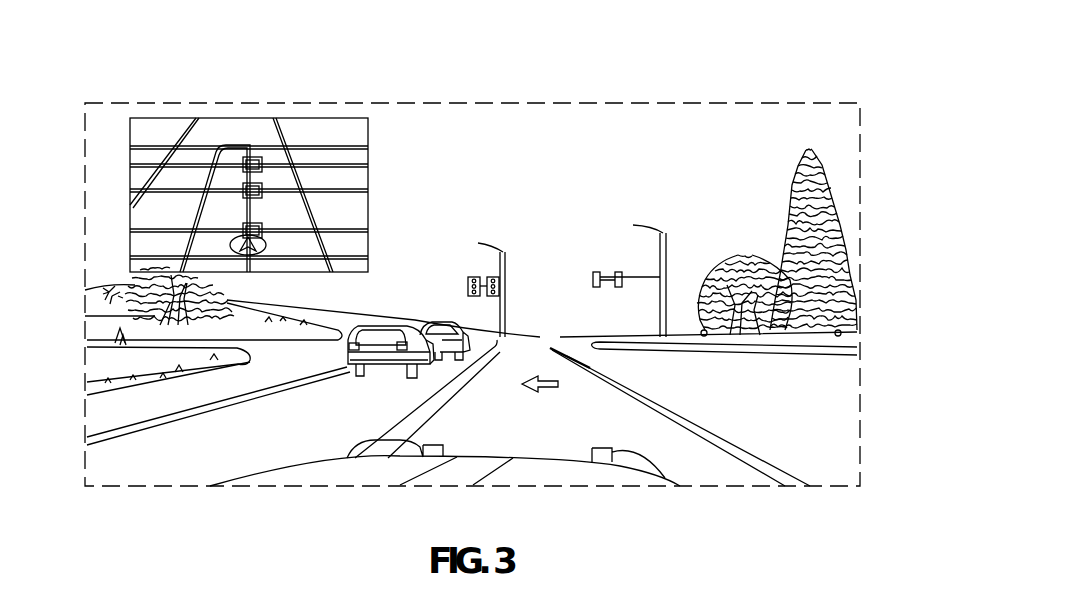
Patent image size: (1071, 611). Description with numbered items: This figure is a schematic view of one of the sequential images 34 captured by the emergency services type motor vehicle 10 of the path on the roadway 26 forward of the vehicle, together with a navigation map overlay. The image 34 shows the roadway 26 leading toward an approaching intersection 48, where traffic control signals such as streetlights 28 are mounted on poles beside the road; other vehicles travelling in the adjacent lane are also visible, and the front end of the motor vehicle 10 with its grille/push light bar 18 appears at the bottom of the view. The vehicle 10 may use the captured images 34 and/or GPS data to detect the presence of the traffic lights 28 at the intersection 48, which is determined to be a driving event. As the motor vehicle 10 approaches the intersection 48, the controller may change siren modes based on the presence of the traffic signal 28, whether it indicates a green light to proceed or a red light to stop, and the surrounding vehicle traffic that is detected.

The motor vehicle 10 is at (296, 452).
The grille/push light bar 18 is at (347, 458).
The roadway 26 is at (662, 436).
The traffic light 28 is at (492, 277).
The sequential images 34 is at (763, 100).
The intersection 48 is at (598, 340).